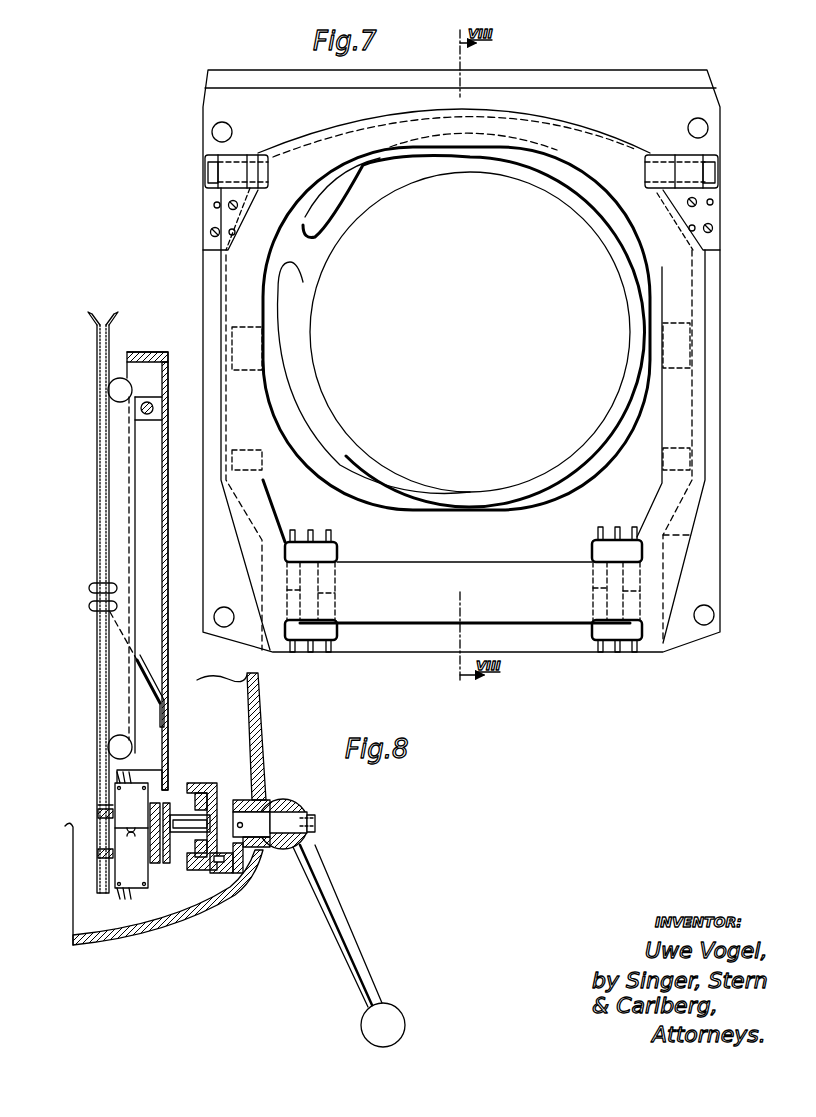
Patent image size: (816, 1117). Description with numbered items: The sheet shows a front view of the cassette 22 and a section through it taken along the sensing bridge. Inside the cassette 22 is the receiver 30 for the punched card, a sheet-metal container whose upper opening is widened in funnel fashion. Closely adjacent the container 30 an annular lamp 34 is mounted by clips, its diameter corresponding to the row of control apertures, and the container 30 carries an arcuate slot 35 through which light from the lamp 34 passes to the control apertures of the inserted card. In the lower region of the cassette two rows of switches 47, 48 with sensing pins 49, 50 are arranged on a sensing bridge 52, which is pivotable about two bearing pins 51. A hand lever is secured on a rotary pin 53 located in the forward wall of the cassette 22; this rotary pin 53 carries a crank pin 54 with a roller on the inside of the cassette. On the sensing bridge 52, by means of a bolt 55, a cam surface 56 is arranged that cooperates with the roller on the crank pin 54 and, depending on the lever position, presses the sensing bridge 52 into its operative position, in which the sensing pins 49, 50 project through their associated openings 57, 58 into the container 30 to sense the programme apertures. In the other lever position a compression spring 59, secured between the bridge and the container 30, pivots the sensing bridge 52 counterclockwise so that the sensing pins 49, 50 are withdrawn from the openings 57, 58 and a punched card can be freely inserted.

In FIG. 8, the cassette 22 is at (262, 702).
In FIG. 8, the receiver 30 is at (98, 438).
In FIG. 7, the annular lamp 34 is at (630, 328).
In FIG. 8, the slot 35 is at (108, 750).
In FIG. 7, the switches 47 is at (598, 549).
In FIG. 8, the switches 47 is at (131, 810).
In FIG. 8, the switches 48 is at (146, 878).
In FIG. 8, the sensing pins 49 is at (98, 814).
In FIG. 8, the sensing pins 50 is at (98, 856).
In FIG. 7, the bearing pins 51 is at (695, 152).
In FIG. 8, the bearing pins 51 is at (154, 408).
In FIG. 7, the sensing bridge 52 is at (368, 566).
In FIG. 8, the sensing bridge 52 is at (166, 478).
In FIG. 8, the rotary pin 53 is at (268, 803).
In FIG. 8, the crank pin 54 is at (223, 869).
In FIG. 8, the bolt 55 is at (178, 814).
In FIG. 8, the cam surface 56 is at (218, 790).
In FIG. 8, the opening 57 is at (99, 806).
In FIG. 8, the opening 58 is at (132, 859).
In FIG. 8, the compression spring 59 is at (147, 673).